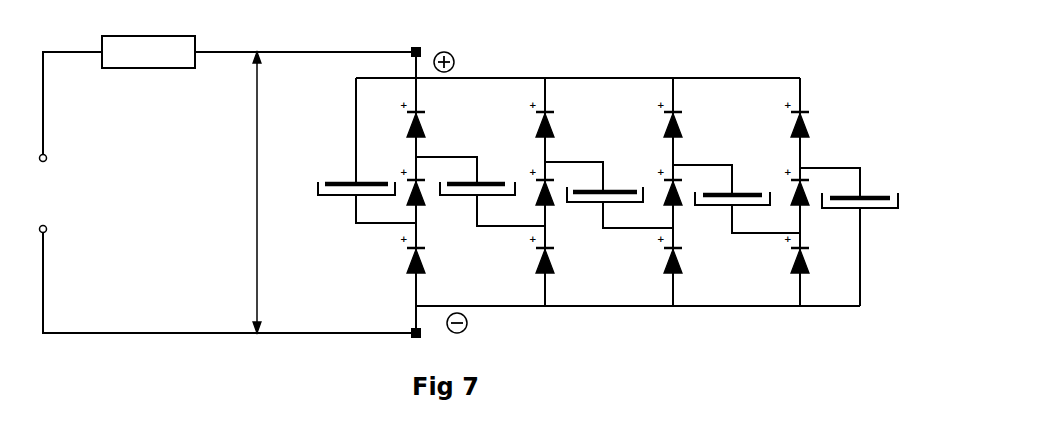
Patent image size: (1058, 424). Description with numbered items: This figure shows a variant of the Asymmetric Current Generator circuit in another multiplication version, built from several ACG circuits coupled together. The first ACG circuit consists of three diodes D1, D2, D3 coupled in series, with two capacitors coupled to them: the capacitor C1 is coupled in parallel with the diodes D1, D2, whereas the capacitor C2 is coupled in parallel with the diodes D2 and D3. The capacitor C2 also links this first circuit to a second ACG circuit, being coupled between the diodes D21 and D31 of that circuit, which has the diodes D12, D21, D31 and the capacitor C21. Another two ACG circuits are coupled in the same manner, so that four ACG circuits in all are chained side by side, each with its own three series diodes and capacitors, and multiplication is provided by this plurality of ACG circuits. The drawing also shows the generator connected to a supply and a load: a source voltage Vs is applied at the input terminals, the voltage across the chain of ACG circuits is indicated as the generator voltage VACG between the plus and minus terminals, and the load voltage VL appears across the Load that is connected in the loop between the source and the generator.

The diode D1 is at (429, 131).
The diode D2 is at (429, 204).
The diode D3 is at (429, 267).
The diode D12 is at (561, 135).
The diode D21 is at (561, 204).
The diode D31 is at (561, 268).
The capacitor C1 is at (367, 150).
The capacitor C2 is at (480, 191).
The capacitor C21 is at (609, 195).
The load Load is at (148, 68).
The load voltage VL is at (141, 15).
The source voltage Vs is at (44, 196).
The AC generator voltage VACG is at (236, 192).